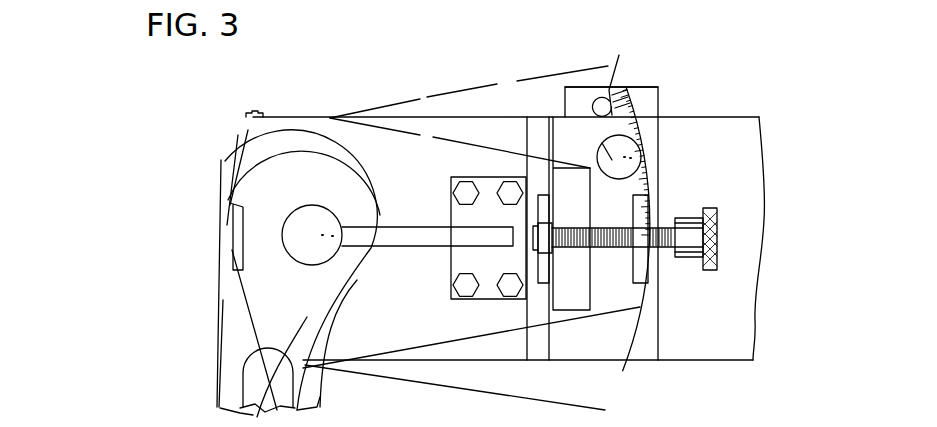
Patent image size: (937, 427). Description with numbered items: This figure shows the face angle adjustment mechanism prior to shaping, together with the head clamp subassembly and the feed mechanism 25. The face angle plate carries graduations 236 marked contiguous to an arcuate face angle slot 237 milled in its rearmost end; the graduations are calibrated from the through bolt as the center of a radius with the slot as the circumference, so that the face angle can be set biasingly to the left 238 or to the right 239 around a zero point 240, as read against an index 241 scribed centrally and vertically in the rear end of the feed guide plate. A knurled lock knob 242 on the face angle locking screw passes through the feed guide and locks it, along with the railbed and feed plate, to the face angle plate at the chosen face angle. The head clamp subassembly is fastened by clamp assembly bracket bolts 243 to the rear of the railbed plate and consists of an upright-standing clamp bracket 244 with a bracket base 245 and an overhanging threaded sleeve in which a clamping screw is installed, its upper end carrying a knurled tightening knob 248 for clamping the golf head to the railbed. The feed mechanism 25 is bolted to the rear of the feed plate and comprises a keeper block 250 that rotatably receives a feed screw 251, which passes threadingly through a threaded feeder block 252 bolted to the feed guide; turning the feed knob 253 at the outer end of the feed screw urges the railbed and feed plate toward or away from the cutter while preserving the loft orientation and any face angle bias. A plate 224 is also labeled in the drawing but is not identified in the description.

The feed mechanism 25 is at (720, 215).
The vertical plate 224 is at (527, 133).
The graduations 236 is at (620, 113).
The arcuate face angle slot 237 is at (613, 82).
The left face angle setting 238 is at (637, 88).
The right face angle setting 239 is at (658, 203).
The zero point 240 is at (650, 147).
The index 241 is at (643, 153).
The knurled lock knob 242 is at (612, 158).
The clamp assembly bracket bolts 243 is at (463, 185).
The clamp bracket 244 is at (443, 236).
The bracket base 245 is at (470, 221).
The knurled tightening knob 248 is at (306, 232).
The keeper block 250 is at (543, 203).
The feed screw 251 is at (604, 249).
The threaded feeder block 252 is at (637, 268).
The feed knob 253 is at (717, 238).